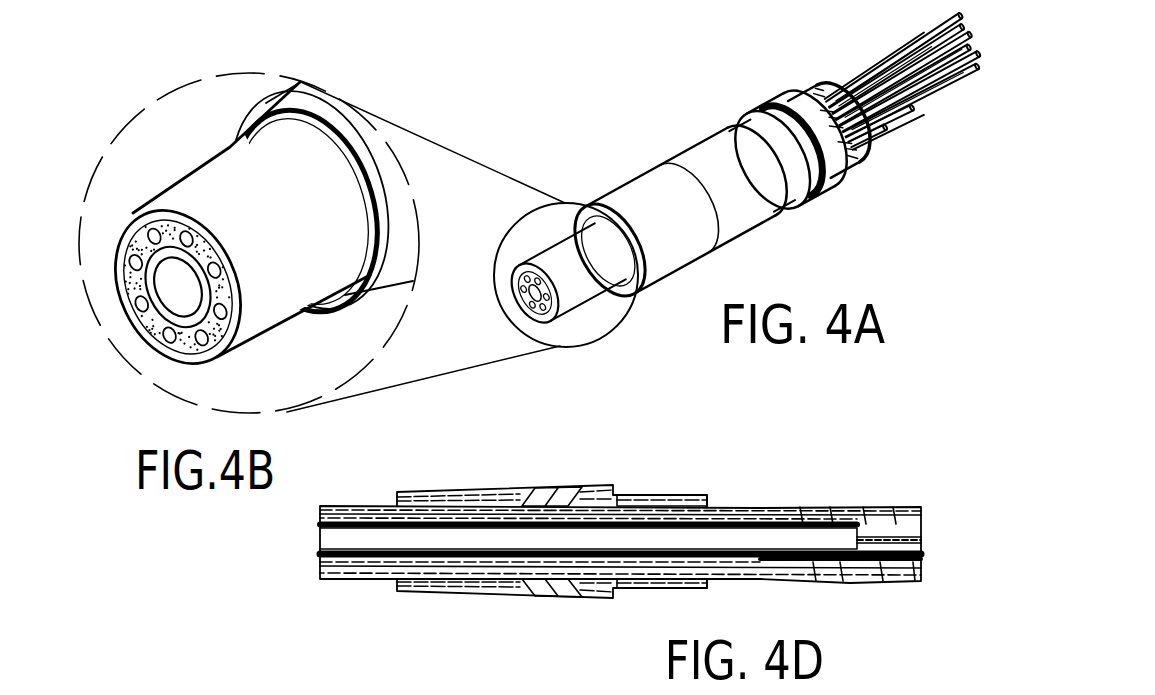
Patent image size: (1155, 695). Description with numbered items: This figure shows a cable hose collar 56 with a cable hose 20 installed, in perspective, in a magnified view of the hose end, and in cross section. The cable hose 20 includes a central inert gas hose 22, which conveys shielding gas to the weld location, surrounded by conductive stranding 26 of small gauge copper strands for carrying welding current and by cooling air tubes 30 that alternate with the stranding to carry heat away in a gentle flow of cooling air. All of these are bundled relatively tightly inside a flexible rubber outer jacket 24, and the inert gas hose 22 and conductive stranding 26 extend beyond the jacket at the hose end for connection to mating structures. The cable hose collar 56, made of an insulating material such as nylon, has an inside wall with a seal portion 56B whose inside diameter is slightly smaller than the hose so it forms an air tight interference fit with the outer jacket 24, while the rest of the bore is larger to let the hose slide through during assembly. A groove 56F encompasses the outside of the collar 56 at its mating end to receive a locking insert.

In FIG. 4B, the cable hose 20 is at (211, 143).
In FIG. 4D, the cable hose 20 is at (310, 518).
In FIG. 4A, the inert gas hose 22 is at (967, 47).
In FIG. 4B, the inert gas hose 22 is at (185, 292).
In FIG. 4D, the inert gas hose 22 is at (333, 540).
In FIG. 4B, the outer jacket 24 is at (213, 358).
In FIG. 4D, the outer jacket 24 is at (355, 506).
In FIG. 4A, the conductive stranding 26 is at (980, 60).
In FIG. 4B, the conductive stranding 26 is at (198, 263).
In FIG. 4D, the conductive stranding 26 is at (925, 510).
In FIG. 4B, the cooling air tubes 30 is at (185, 230).
In FIG. 4A, the cable hose collar 56 is at (680, 211).
In FIG. 4B, the cable hose collar 56 is at (388, 178).
In FIG. 4D, the cable hose collar 56 is at (503, 595).
In FIG. 4D, the seal portion 56B is at (536, 597).
In FIG. 4A, the groove 56F is at (800, 178).
In FIG. 4D, the groove 56F is at (667, 495).